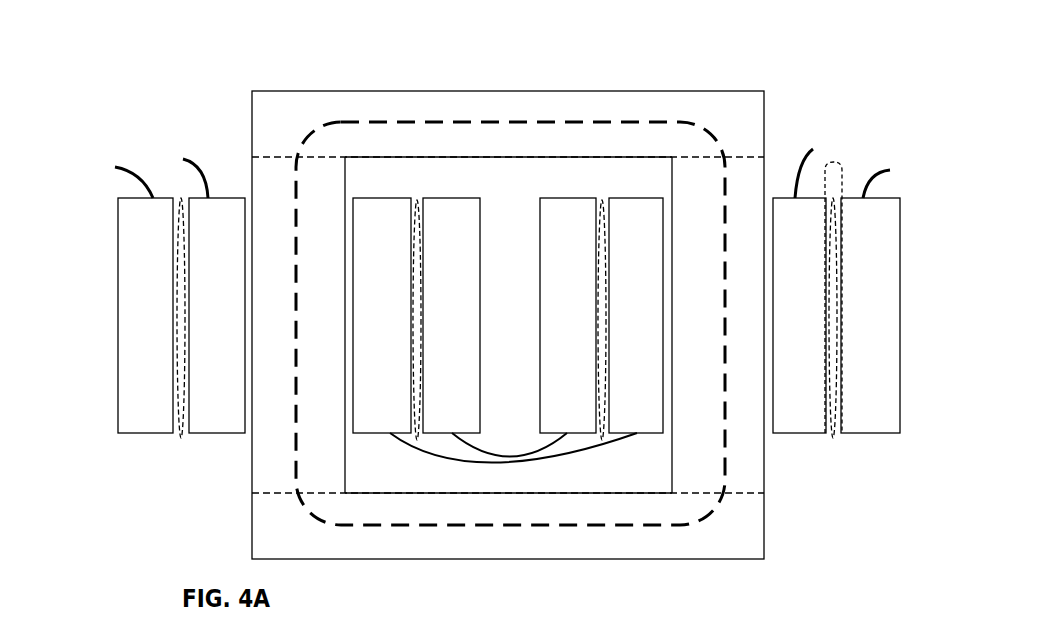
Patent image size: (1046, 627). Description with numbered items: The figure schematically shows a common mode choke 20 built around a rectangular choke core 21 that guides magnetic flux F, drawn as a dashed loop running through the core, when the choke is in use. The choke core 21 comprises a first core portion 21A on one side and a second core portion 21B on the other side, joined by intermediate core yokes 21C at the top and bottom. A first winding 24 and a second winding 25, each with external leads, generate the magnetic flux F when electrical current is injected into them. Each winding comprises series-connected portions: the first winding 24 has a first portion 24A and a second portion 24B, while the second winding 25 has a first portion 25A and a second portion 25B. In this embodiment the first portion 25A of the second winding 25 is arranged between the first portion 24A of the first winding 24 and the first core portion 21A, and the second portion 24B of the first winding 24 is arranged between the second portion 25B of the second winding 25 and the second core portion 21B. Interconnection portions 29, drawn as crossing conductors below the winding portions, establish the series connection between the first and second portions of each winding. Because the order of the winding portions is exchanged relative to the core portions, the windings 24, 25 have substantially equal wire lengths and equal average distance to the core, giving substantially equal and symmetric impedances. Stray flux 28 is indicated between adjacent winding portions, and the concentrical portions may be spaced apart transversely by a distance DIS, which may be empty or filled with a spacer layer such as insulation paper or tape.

The common mode choke 20 is at (156, 66).
The choke core 21 is at (248, 66).
The first core portion 21A is at (260, 463).
The second core portion 21B is at (752, 472).
The intermediate core yoke 21C is at (746, 95).
The first winding 24 is at (120, 165).
The second winding 25 is at (194, 156).
The first portion of the first winding 24A is at (299, 315).
The second portion of the first winding 24B is at (717, 315).
The first portion of the second winding 25A is at (300, 315).
The second portion of the second winding 25B is at (720, 315).
The stray flux 28 is at (432, 192).
The interconnection portion 29 is at (410, 464).
The magnetic flux F is at (311, 140).
The distance DIS is at (835, 162).